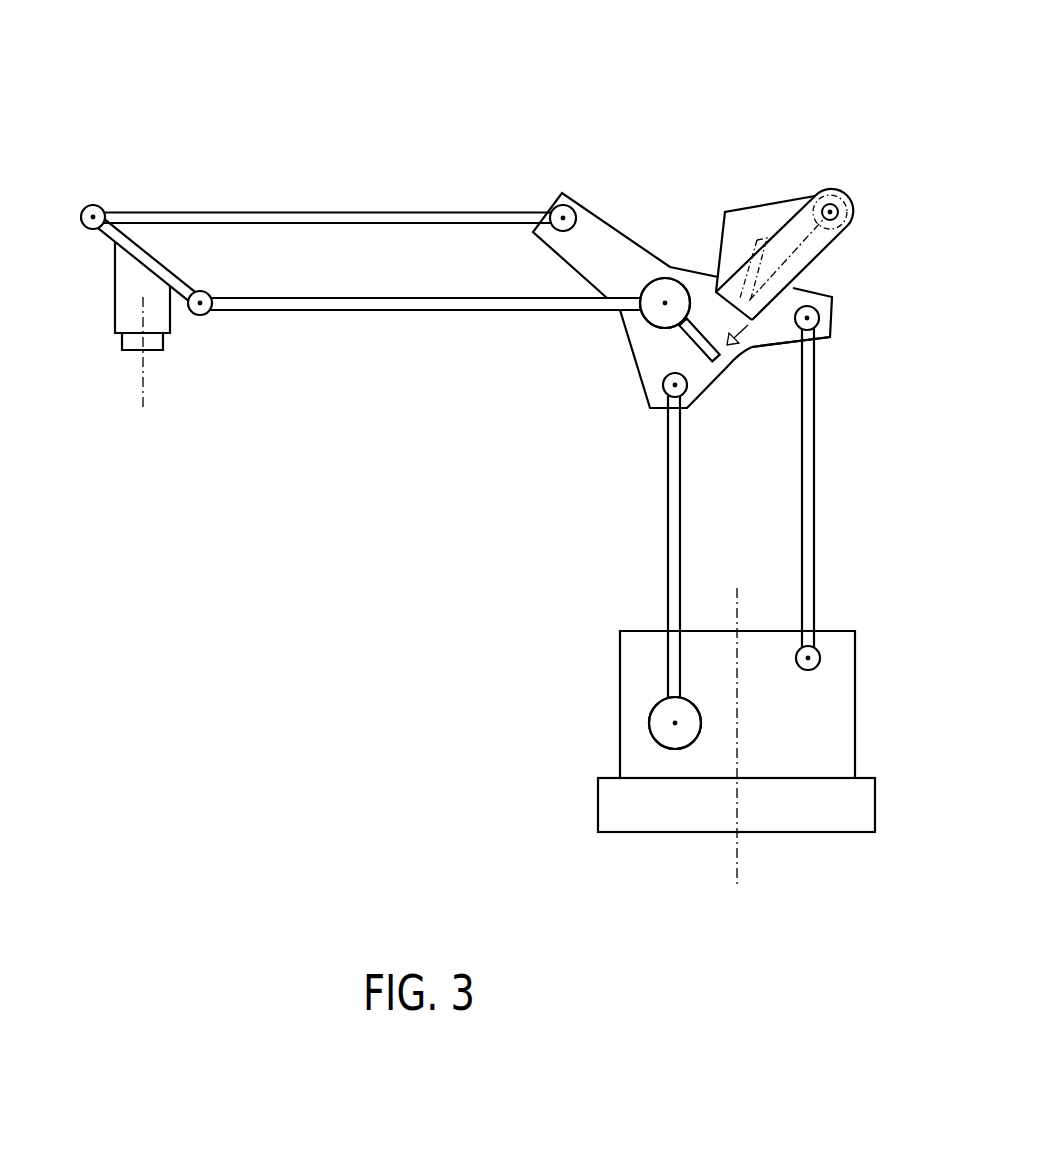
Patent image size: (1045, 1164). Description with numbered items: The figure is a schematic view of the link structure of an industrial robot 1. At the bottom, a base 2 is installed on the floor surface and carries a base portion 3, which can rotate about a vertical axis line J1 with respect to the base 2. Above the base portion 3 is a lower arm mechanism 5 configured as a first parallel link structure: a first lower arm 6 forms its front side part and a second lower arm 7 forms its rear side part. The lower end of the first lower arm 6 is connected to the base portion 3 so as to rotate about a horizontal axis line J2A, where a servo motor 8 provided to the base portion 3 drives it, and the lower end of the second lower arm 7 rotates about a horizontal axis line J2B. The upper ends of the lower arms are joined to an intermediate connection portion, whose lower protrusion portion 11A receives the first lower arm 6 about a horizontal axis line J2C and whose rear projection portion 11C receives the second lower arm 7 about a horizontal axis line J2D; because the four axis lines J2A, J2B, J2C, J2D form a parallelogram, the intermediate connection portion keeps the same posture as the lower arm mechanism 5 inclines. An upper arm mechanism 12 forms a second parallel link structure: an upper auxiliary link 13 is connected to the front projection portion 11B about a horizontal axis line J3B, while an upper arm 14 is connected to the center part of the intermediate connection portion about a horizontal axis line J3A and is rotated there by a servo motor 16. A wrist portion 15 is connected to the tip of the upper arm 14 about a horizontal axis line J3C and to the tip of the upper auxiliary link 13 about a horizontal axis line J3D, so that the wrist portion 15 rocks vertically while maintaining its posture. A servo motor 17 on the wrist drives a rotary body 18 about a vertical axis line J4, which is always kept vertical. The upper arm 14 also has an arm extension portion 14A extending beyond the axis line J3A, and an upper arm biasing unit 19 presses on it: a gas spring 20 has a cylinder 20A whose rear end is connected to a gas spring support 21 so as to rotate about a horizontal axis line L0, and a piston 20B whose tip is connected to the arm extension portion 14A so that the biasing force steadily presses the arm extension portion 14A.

The robot 1 is at (556, 96).
The base 2 is at (838, 830).
The base portion 3 is at (856, 703).
The lower arm mechanism 5 is at (626, 542).
The first lower arm 6 is at (667, 515).
The second lower arm 7 is at (815, 485).
The servo motor 8 is at (650, 708).
The lower protrusion portion 11A is at (647, 368).
The front projection portion 11B is at (600, 230).
The rear projection portion 11C is at (832, 297).
The upper arm mechanism 12 is at (339, 178).
The upper auxiliary link 13 is at (405, 212).
The upper arm 14 is at (435, 311).
The arm extension portion 14A is at (685, 337).
The wrist portion 15 is at (112, 297).
The servo motor 16 is at (663, 277).
The servo motor 17 is at (114, 323).
The rotary body 18 is at (132, 352).
The upper arm biasing unit 19 is at (798, 146).
The gas spring 20 is at (688, 446).
The cylinder 20A is at (762, 298).
The piston 20B is at (723, 365).
The gas spring support 21 is at (740, 218).
The vertical axis line J1 is at (737, 862).
The horizontal axis line J2A is at (672, 724).
The horizontal axis line J2B is at (814, 650).
The horizontal axis line J2C is at (664, 393).
The horizontal axis line J2D is at (815, 325).
The horizontal axis line J3A is at (662, 304).
The horizontal axis line J3B is at (553, 210).
The horizontal axis line J3C is at (206, 313).
The horizontal axis line J3D is at (92, 207).
The vertical axis line J4 is at (146, 397).
The horizontal axis line L0 is at (838, 203).